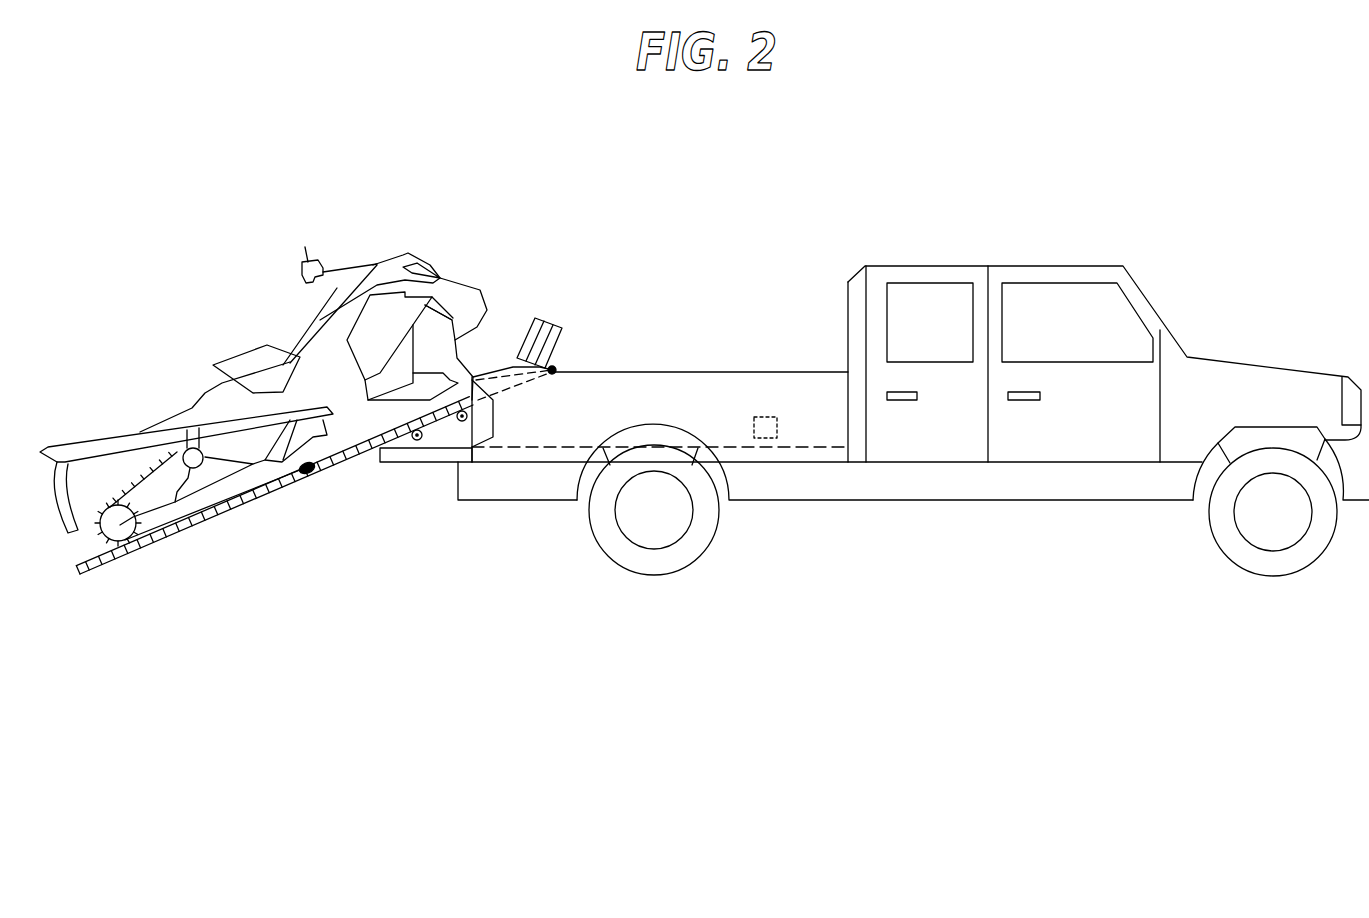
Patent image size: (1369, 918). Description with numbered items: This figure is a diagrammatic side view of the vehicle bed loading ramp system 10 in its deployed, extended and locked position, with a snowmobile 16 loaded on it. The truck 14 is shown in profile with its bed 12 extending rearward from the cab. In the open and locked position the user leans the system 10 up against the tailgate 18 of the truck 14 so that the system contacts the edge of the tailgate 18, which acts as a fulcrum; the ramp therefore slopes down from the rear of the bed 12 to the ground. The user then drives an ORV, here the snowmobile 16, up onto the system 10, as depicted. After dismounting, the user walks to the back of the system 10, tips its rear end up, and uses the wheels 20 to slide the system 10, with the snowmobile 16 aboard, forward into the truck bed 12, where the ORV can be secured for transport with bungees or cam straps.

The vehicle bed loading ramp system 10 is at (228, 534).
The bed 12 is at (707, 393).
The truck 14 is at (1222, 270).
The snowmobile 16 is at (430, 250).
The tailgate 18 is at (428, 463).
The wheels 20 is at (410, 443).